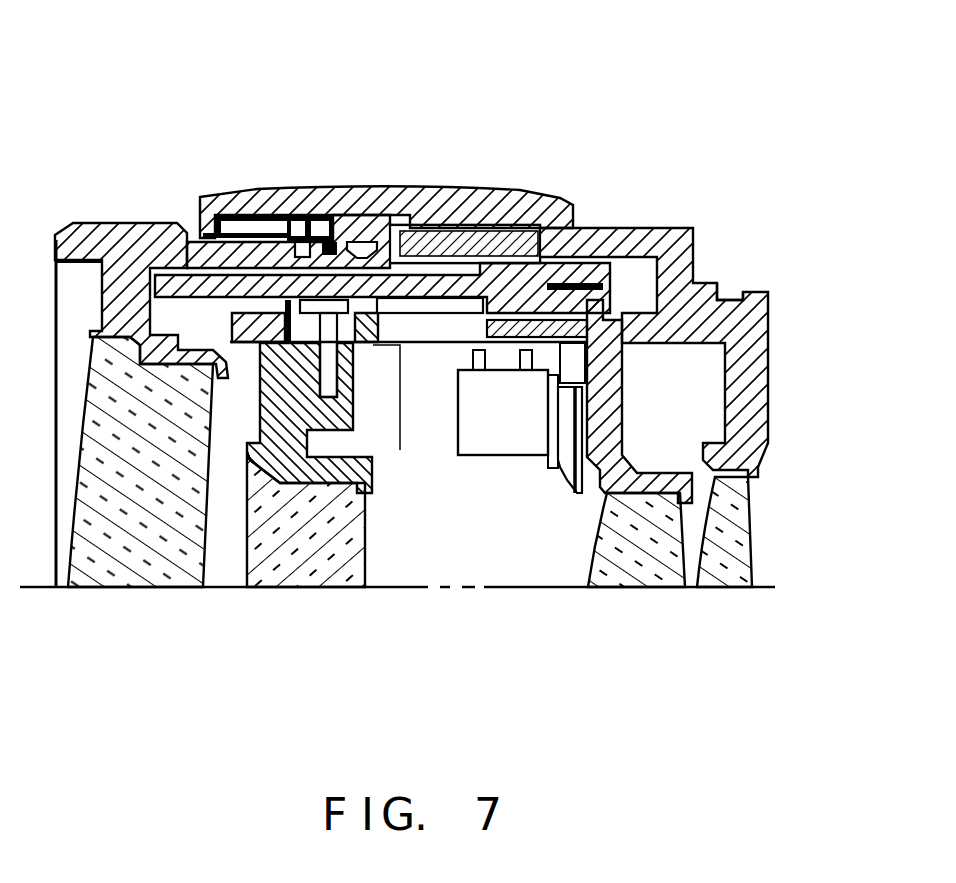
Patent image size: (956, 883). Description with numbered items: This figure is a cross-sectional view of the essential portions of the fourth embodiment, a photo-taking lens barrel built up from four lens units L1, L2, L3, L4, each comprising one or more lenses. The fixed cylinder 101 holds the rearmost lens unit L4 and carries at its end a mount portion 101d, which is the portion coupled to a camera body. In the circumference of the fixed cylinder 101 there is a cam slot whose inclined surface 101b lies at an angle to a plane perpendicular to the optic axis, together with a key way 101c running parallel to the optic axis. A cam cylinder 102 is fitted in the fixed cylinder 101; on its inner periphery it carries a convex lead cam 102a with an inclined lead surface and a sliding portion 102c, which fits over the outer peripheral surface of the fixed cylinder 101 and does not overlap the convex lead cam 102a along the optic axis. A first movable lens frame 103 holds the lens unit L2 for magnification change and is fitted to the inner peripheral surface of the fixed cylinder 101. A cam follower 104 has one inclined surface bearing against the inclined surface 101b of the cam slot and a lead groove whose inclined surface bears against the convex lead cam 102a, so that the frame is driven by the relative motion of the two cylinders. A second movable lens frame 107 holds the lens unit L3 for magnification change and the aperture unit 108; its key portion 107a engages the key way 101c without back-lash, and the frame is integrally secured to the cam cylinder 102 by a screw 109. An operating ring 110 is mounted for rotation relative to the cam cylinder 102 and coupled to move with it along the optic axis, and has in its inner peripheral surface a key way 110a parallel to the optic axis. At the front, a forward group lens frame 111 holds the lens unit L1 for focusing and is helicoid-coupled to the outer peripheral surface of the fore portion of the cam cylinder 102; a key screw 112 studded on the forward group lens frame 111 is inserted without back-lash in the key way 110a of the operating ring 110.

The fixed cylinder 101 is at (693, 236).
The inclined surface 101b is at (398, 380).
The key way 101c is at (443, 330).
The mount portion 101d is at (740, 290).
The cam cylinder 102 is at (537, 268).
The convex lead cam 102a is at (362, 248).
The sliding portion 102c is at (585, 300).
The first movable lens frame 103 is at (353, 417).
The cam follower 104 is at (292, 290).
The second movable lens frame 107 is at (594, 497).
The key portion 107a is at (498, 315).
The aperture unit 108 is at (517, 430).
The screw 109 is at (612, 313).
The operating ring 110 is at (305, 187).
The key way 110a is at (267, 190).
The forward group lens frame 111 is at (112, 230).
The key screw 112 is at (320, 190).
The lens unit L1 is at (120, 565).
The lens unit L2 is at (300, 573).
The lens unit L3 is at (622, 577).
The lens unit L4 is at (723, 580).